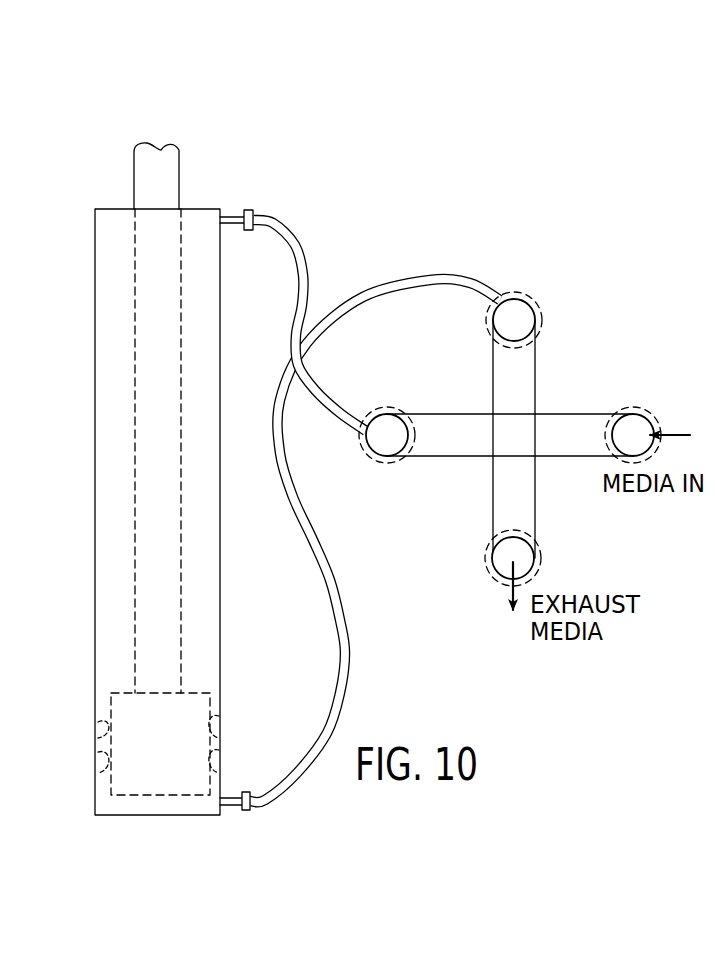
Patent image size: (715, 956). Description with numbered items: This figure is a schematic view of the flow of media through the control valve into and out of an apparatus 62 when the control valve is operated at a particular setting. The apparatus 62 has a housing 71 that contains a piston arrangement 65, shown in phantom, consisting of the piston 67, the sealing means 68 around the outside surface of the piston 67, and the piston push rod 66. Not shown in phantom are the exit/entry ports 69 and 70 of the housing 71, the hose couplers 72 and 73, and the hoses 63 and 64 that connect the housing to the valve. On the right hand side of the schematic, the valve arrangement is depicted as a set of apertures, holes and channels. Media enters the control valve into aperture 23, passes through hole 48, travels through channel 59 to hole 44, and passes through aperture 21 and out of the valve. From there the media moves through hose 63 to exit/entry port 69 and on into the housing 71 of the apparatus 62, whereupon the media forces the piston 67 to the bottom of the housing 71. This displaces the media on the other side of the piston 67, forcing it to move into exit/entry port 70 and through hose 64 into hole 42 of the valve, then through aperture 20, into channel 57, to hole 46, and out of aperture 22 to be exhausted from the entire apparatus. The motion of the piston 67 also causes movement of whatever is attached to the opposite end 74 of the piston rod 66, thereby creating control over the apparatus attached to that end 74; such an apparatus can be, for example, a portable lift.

The aperture 20 is at (520, 291).
The aperture 21 is at (370, 410).
The aperture 22 is at (483, 560).
The aperture 23 is at (628, 406).
The hole 42 is at (523, 310).
The hole 44 is at (383, 447).
The hole 46 is at (522, 558).
The hole 48 is at (650, 421).
The channel 57 is at (535, 357).
The channel 59 is at (558, 422).
The apparatus 62 is at (86, 484).
The hose 63 is at (307, 243).
The hose 64 is at (348, 630).
The piston arrangement 65 is at (120, 804).
The piston push rod 66 is at (168, 168).
The piston 67 is at (163, 782).
The sealing means 68 is at (217, 760).
The exit/entry port 69 is at (227, 210).
The exit/entry port 70 is at (232, 810).
The housing 71 is at (220, 562).
The hose coupler 72 is at (253, 209).
The hose coupler 73 is at (250, 802).
The opposite end 74 is at (153, 134).